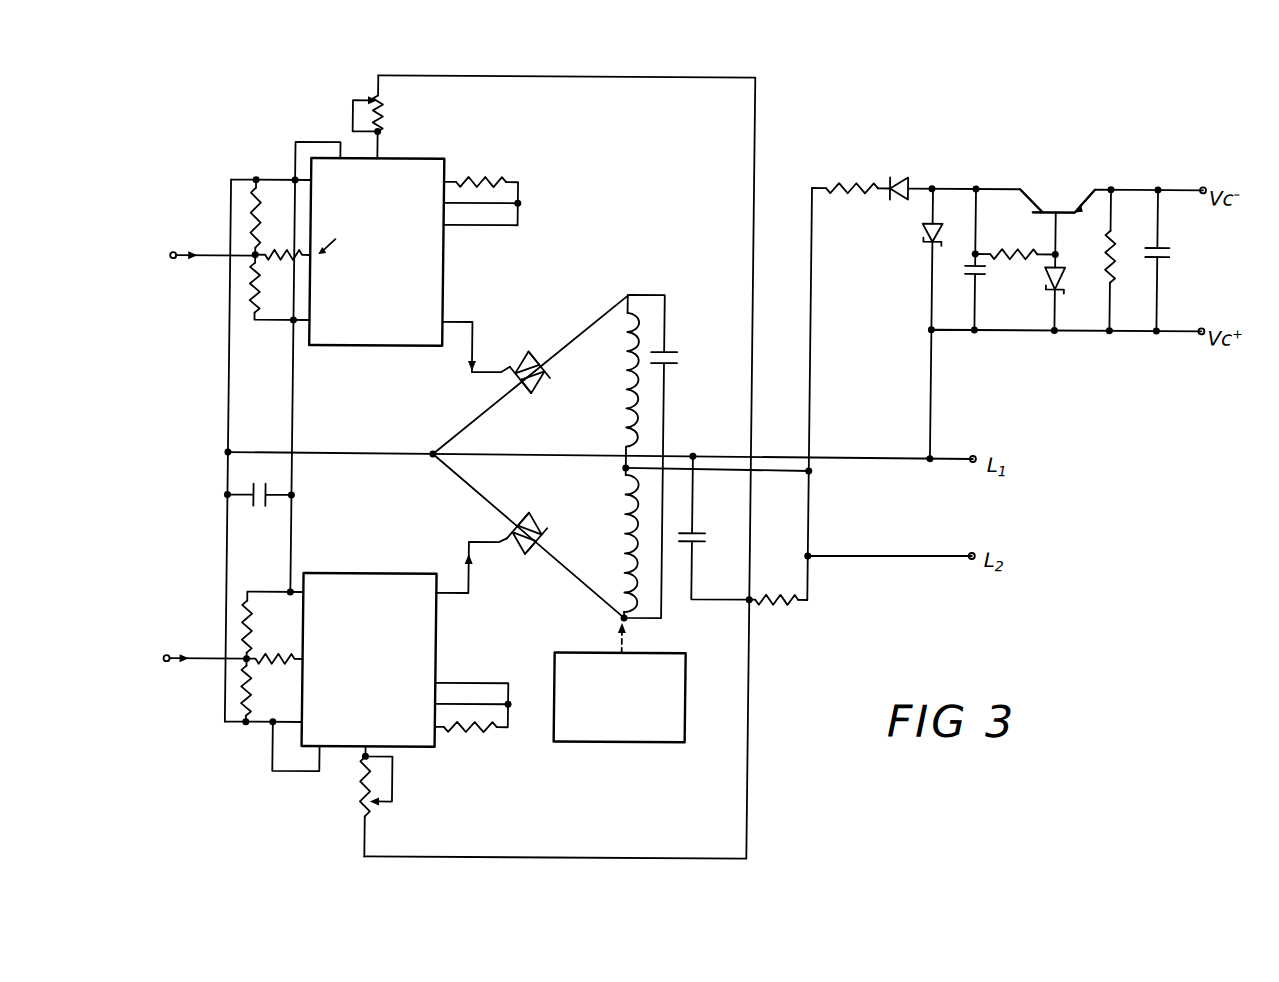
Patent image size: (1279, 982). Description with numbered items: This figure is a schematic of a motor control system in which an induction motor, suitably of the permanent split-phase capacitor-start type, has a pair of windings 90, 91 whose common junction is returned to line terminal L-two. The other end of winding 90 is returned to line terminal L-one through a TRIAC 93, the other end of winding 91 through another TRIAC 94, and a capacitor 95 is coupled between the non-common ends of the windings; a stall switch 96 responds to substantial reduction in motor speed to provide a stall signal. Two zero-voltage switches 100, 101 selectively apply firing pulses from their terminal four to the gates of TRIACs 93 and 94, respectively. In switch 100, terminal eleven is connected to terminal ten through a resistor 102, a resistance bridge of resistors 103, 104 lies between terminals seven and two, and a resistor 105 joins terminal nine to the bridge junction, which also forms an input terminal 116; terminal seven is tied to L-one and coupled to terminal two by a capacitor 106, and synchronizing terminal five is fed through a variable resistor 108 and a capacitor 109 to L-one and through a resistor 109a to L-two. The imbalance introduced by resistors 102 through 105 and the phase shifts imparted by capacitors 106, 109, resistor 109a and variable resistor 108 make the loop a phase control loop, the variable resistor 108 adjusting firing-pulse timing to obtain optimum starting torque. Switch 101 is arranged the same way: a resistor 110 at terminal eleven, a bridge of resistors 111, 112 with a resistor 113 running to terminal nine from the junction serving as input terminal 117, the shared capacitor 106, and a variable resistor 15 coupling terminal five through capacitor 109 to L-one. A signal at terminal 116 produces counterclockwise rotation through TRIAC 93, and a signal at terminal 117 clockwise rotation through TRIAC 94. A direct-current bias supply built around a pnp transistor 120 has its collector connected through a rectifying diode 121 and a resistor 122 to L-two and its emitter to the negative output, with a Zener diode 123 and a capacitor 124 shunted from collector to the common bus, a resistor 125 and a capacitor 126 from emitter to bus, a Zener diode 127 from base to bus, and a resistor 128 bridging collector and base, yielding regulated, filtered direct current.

The variable resistor 15 is at (369, 820).
The winding 90 is at (626, 407).
The winding 91 is at (635, 531).
The TRIAC 93 is at (528, 359).
The TRIAC 94 is at (520, 560).
The capacitor 95 is at (667, 352).
The stall switch 96 is at (688, 686).
The zero-voltage switch 100 is at (441, 259).
The zero-voltage switch 101 is at (437, 641).
The resistor 102 is at (492, 181).
The resistor 103 is at (256, 201).
The resistor 104 is at (257, 287).
The resistor 105 is at (275, 255).
The capacitor 106 is at (286, 490).
The variable resistor 108 is at (378, 113).
The capacitor 109 is at (698, 545).
The resistor 109a is at (780, 606).
The resistor 110 is at (470, 732).
The resistor 111 is at (253, 700).
The resistor 112 is at (251, 618).
The resistor 113 is at (285, 656).
The input terminal 116 is at (173, 254).
The input terminal 117 is at (171, 658).
The pnp transistor 120 is at (1052, 194).
The rectifying diode 121 is at (901, 176).
The resistor 122 is at (860, 184).
The Zener diode 123 is at (925, 229).
The capacitor 124 is at (977, 280).
The resistor 125 is at (1110, 248).
The capacitor 126 is at (1160, 256).
The Zener diode 127 is at (1062, 288).
The resistor 128 is at (1009, 251).